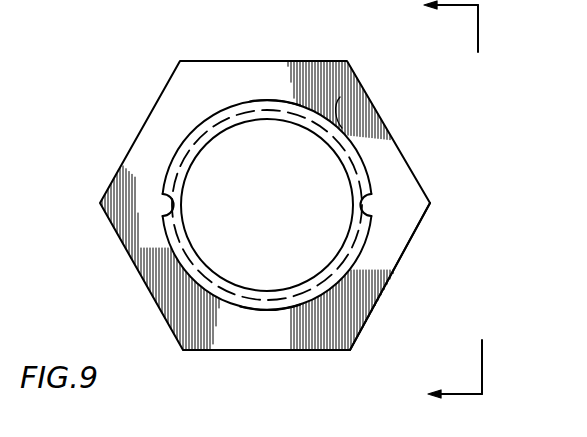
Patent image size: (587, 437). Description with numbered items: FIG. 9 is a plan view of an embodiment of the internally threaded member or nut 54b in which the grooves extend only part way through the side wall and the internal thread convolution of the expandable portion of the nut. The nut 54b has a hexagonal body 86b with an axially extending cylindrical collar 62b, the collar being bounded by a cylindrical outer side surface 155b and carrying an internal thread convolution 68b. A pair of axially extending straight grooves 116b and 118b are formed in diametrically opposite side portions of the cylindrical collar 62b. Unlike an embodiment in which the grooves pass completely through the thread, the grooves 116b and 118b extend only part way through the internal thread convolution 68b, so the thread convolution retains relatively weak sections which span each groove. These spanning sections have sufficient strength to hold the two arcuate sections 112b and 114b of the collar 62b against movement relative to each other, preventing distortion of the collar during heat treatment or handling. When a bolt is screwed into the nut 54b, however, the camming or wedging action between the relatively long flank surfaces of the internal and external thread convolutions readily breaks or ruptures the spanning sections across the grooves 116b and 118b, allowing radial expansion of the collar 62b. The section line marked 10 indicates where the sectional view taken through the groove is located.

The nut 54b is at (262, 192).
The hexagonal body 86b is at (393, 268).
The cylindrical outer side surface 155b is at (340, 97).
The cylindrical collar 62b is at (265, 204).
The internal thread convolution 68b is at (217, 132).
The groove 116b is at (163, 204).
The groove 118b is at (371, 204).
The arcuate section 112b is at (293, 102).
The arcuate section 114b is at (275, 310).
The section line 10- 10 is at (441, 203).